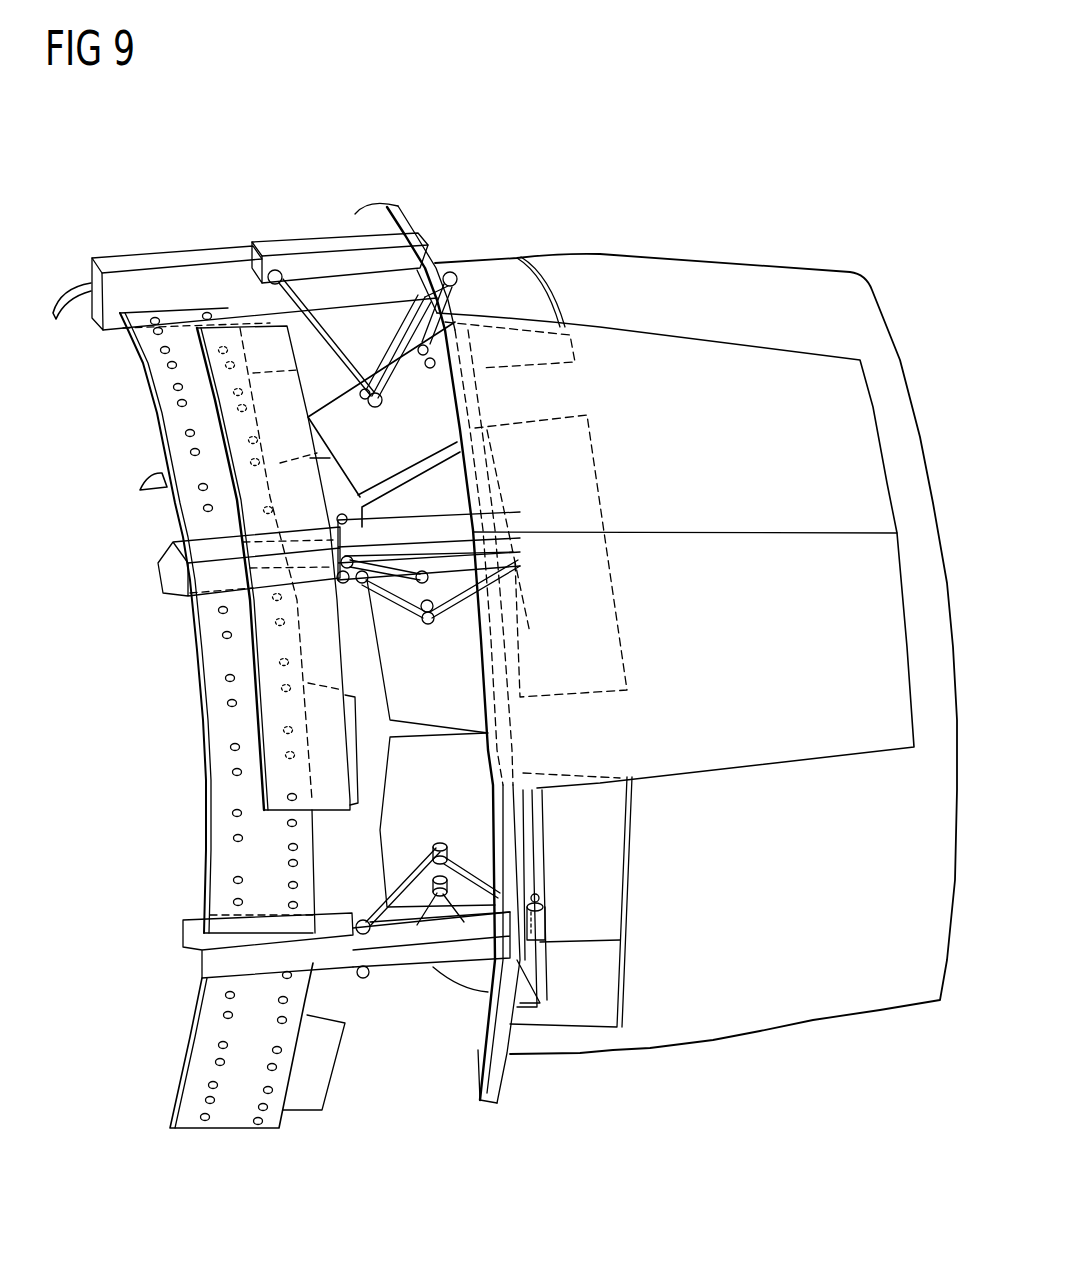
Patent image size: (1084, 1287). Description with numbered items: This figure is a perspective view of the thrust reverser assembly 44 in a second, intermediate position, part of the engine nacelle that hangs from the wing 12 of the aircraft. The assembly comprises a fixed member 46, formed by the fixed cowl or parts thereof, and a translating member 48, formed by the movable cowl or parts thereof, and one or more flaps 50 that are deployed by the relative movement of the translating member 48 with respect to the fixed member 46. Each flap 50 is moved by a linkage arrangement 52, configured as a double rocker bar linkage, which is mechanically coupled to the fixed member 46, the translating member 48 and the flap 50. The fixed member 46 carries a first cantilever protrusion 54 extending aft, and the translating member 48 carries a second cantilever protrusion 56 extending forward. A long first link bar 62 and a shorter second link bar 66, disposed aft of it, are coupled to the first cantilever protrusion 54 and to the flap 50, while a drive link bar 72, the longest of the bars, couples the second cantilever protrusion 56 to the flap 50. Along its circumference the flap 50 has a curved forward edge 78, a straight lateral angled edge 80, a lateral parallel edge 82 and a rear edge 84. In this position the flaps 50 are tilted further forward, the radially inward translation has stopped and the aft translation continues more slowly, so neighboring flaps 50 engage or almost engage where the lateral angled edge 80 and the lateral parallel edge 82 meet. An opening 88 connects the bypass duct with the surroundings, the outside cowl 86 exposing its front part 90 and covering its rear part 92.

The wing 12 is at (103, 166).
The thrust reverser assembly 44 is at (262, 193).
The fixed member 46 is at (178, 418).
The translating member 48 is at (737, 280).
The flap 50 is at (440, 410).
The linkage arrangement 52 is at (340, 212).
The first cantilever protrusion 54 is at (234, 292).
The second cantilever protrusion 56 is at (319, 266).
The first link bar 62 is at (395, 317).
The second link bar 66 is at (446, 312).
The drive link bar 72 is at (340, 350).
The forward edge 78 is at (330, 490).
The lateral angled edge 80 is at (383, 480).
The lateral parallel edge 82 is at (453, 447).
The rear edge 84 is at (540, 885).
The outside cowl 86 is at (806, 366).
The opening 88 is at (396, 1078).
The front part 90 is at (607, 990).
The rear part 92 is at (328, 993).